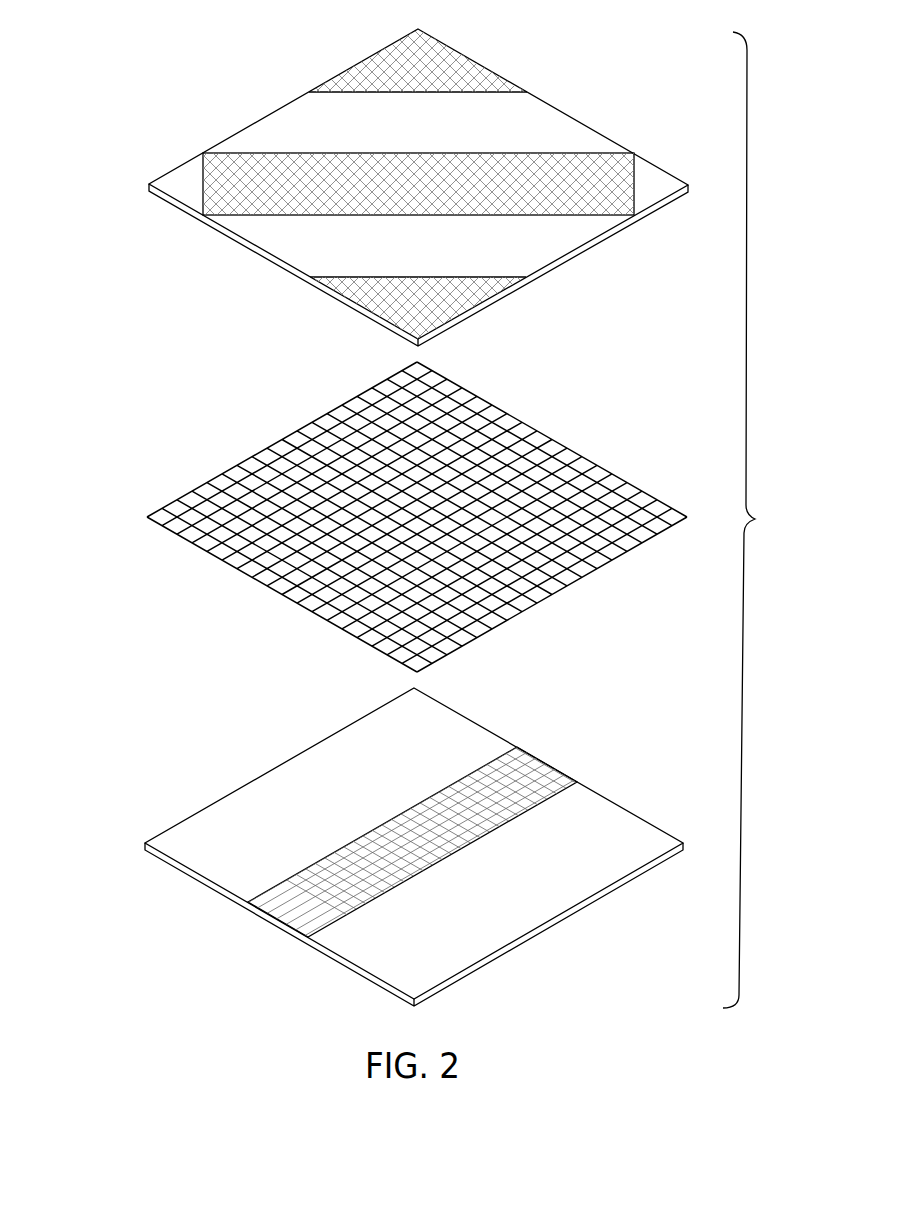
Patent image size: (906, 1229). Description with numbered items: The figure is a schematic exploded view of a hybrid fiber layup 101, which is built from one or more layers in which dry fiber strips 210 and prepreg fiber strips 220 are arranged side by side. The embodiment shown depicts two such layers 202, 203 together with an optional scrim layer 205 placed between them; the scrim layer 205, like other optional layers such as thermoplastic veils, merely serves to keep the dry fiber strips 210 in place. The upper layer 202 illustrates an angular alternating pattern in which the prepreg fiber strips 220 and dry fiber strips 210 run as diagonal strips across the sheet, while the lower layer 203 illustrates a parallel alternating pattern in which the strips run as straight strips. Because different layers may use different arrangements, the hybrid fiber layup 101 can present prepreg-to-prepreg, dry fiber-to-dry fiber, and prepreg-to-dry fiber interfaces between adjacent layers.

The hybrid fiber layup 101 is at (756, 520).
The layer 202 is at (174, 211).
The layer 203 is at (139, 873).
The scrim layer 205 is at (643, 467).
The dry fiber strips 210 is at (552, 124).
The prepreg fiber strips 220 is at (210, 183).